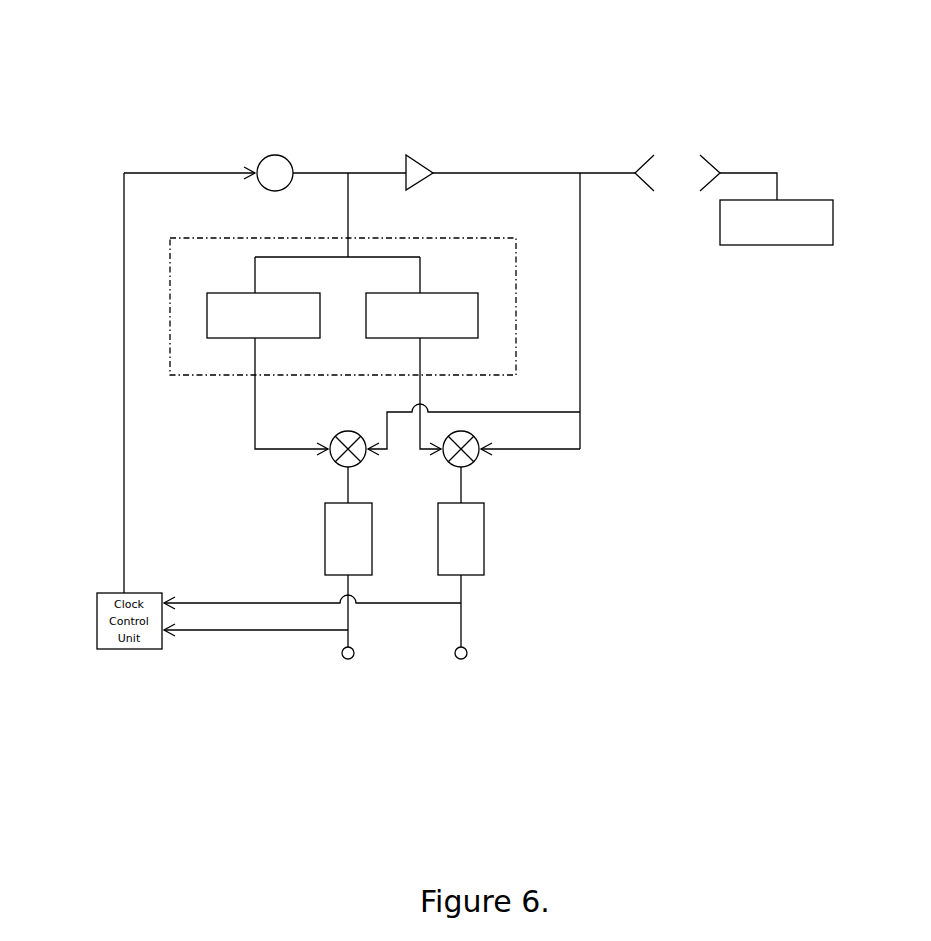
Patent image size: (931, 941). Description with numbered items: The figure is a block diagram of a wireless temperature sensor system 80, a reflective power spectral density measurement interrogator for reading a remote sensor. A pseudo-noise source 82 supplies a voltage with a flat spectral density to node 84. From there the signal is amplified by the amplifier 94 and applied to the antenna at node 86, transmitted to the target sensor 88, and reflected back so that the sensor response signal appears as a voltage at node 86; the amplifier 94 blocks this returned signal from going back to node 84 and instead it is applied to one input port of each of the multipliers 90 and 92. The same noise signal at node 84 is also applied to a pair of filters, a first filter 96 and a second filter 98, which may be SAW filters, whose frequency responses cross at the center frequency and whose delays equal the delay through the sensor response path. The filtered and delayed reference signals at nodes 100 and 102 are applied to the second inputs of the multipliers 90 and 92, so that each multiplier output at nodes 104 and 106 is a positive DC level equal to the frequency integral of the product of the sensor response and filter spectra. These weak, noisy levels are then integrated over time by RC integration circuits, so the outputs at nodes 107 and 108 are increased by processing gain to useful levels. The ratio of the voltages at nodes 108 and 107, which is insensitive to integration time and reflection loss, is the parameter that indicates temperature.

The wireless temperature sensor system 80 is at (588, 135).
The pseudo-noise (PN) source 82 is at (272, 150).
The node 84 is at (328, 167).
The node 86 is at (523, 163).
The target sensor 88 is at (790, 252).
The multiplier 90 is at (327, 458).
The multiplier 92 is at (480, 458).
The amplifier 94 is at (432, 180).
The filter #1 96 is at (207, 307).
The filter #2 98 is at (484, 321).
The node 100 is at (255, 413).
The node 102 is at (417, 430).
The node 104 is at (342, 481).
The node 106 is at (470, 480).
The node 107 is at (341, 657).
The node 108 is at (479, 656).